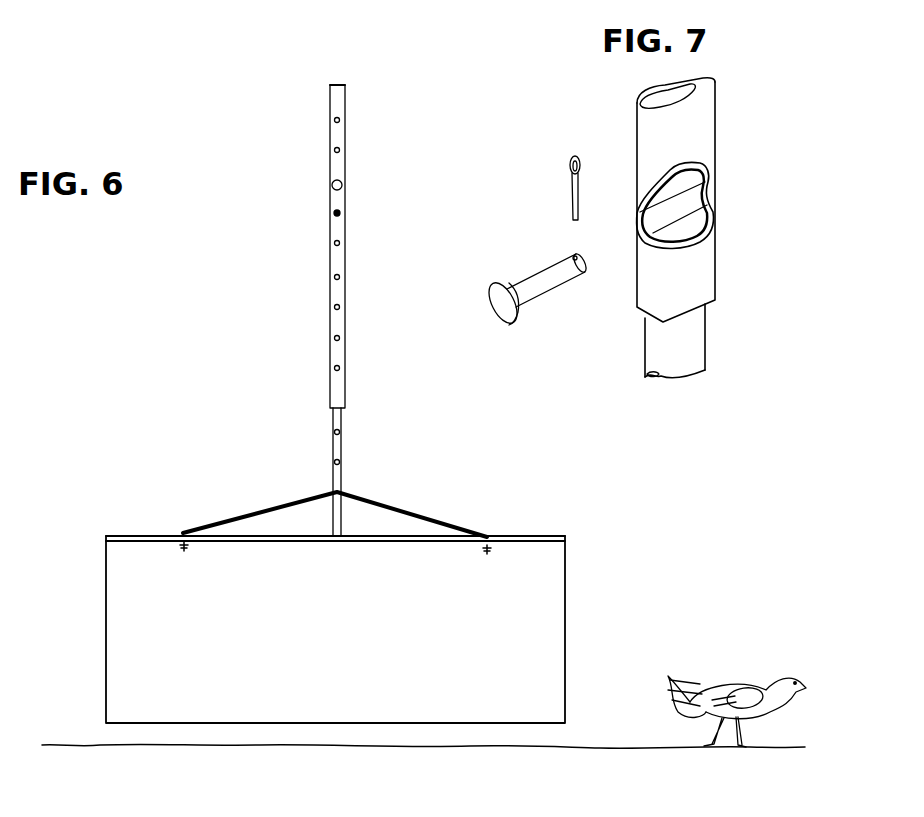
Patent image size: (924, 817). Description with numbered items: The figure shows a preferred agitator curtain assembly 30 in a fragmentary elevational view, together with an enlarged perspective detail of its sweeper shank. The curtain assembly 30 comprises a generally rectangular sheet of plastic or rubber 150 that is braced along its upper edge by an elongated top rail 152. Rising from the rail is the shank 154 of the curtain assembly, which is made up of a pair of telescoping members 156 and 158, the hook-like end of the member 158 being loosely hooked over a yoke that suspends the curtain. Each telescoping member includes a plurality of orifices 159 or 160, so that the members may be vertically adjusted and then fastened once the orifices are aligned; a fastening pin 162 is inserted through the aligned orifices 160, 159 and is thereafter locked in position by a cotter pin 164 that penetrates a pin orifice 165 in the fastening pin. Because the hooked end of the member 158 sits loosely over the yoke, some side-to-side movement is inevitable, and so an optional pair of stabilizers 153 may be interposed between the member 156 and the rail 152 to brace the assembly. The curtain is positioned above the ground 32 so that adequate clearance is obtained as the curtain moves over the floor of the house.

In FIG. 6, the agitator curtain assembly 30 is at (157, 497).
In FIG. 6, the ground 32 is at (508, 747).
In FIG. 6, the sheet of plastic or rubber 150 is at (545, 631).
In FIG. 6, the top rail 152 is at (427, 542).
In FIG. 6, the stabilizers 153 is at (242, 517).
In FIG. 6, the shank 154 is at (312, 445).
In FIG. 7, the shank 154 is at (797, 93).
In FIG. 6, the telescoping member 156 is at (343, 455).
In FIG. 7, the telescoping member 156 is at (695, 355).
In FIG. 6, the telescoping member 158 is at (345, 265).
In FIG. 7, the telescoping member 158 is at (708, 136).
In FIG. 6, the orifices 159 is at (343, 338).
In FIG. 7, the orifices 159 is at (706, 188).
In FIG. 6, the orifices 160 is at (335, 463).
In FIG. 7, the fastening pin 162 is at (568, 283).
In FIG. 7, the cotter pin 164 is at (576, 155).
In FIG. 7, the pin orifice 165 is at (575, 256).